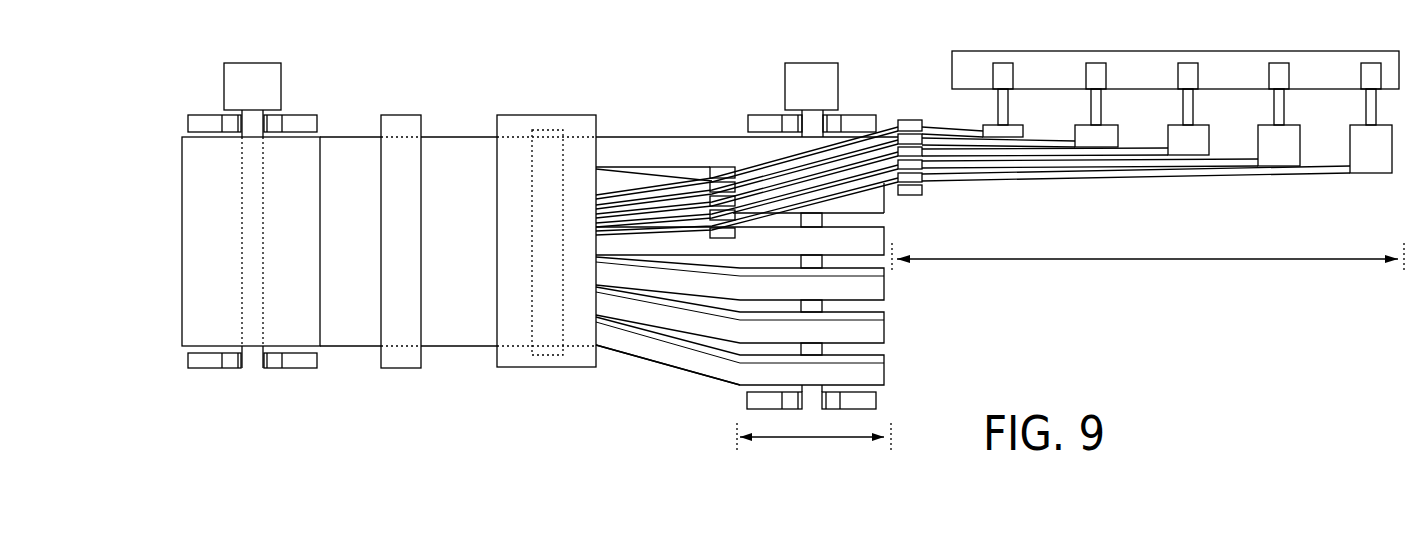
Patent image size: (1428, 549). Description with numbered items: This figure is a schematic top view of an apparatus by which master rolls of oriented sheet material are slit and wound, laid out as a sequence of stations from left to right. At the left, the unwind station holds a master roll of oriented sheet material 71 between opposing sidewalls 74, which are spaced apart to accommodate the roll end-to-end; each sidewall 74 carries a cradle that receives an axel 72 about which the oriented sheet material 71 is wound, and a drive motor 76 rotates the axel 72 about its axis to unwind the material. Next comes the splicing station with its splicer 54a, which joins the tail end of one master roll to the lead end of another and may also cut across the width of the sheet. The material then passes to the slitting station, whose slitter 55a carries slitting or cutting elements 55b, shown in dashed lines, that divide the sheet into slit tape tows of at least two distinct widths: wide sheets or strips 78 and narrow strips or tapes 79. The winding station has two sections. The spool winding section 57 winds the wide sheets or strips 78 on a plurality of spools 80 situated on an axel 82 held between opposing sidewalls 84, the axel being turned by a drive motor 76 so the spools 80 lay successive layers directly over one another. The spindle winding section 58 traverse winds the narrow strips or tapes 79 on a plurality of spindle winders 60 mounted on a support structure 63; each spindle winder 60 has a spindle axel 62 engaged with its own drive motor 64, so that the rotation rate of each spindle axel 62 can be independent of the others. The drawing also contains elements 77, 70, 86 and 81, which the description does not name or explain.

The oriented sheet material 71 is at (228, 201).
The axel 72 is at (250, 362).
The opposing sidewalls 74 is at (314, 120).
The drive motor 76 is at (268, 74).
The splicer 54a is at (398, 360).
The frame 77 is at (452, 137).
The slitter 55a is at (510, 360).
The slitting or cutting elements 55b is at (540, 286).
The narrow strips or tapes 79 is at (668, 180).
The connector 70 is at (720, 166).
The actuator 86 is at (792, 73).
The opposing sidewalls 84 is at (747, 400).
The substrate strip 81 is at (880, 247).
The axel 82 is at (810, 305).
The spools 80 is at (885, 330).
The wide sheets or strips 78 is at (641, 358).
The spool winding section 57 is at (814, 447).
The spindle winding section 58 is at (1148, 270).
The support structure 63 is at (1138, 62).
The drive motor 64 is at (1277, 70).
The spindle axel 62 is at (1192, 100).
The spindle winders 60 is at (1372, 175).